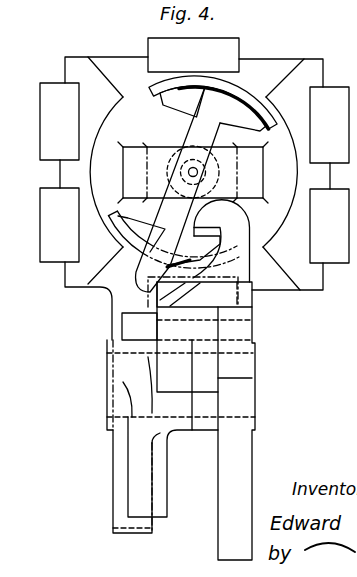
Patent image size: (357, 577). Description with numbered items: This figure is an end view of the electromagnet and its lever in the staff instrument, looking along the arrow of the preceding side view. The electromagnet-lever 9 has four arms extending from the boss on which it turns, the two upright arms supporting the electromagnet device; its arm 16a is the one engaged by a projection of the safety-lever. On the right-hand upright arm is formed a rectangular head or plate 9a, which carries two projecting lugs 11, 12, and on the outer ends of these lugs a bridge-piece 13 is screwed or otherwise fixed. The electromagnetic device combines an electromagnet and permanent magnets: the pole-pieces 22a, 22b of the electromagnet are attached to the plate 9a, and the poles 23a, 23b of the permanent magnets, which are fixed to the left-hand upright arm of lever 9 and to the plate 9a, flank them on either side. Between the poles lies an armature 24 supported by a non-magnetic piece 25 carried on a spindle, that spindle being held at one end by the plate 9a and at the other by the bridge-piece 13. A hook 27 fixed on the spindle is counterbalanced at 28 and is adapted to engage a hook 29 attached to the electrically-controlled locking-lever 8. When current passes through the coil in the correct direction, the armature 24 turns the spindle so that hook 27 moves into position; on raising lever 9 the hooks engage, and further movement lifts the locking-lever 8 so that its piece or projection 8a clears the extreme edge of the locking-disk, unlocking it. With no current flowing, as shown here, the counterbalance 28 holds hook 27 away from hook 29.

The locking-lever 8 is at (245, 332).
The piece or projection 8a is at (170, 337).
The electromagnet-lever 9 is at (122, 487).
The rectangular head or plate 9a is at (262, 63).
The projecting lug 11 is at (123, 170).
The projecting lug 12 is at (264, 167).
The bridge-piece 13 is at (154, 140).
The arm of the electromagnet-lever 16a is at (158, 508).
The pole of the electromagnet 22a is at (193, 55).
The pole of the electromagnet 22b is at (232, 293).
The pole of the permanent magnet 23a is at (194, 123).
The pole of the permanent magnet 23b is at (194, 225).
The armature 24 is at (250, 98).
The non-magnetic piece 25 is at (184, 184).
The hook 27 is at (147, 285).
The counterbalance 28 is at (235, 109).
The hook 29 is at (196, 233).